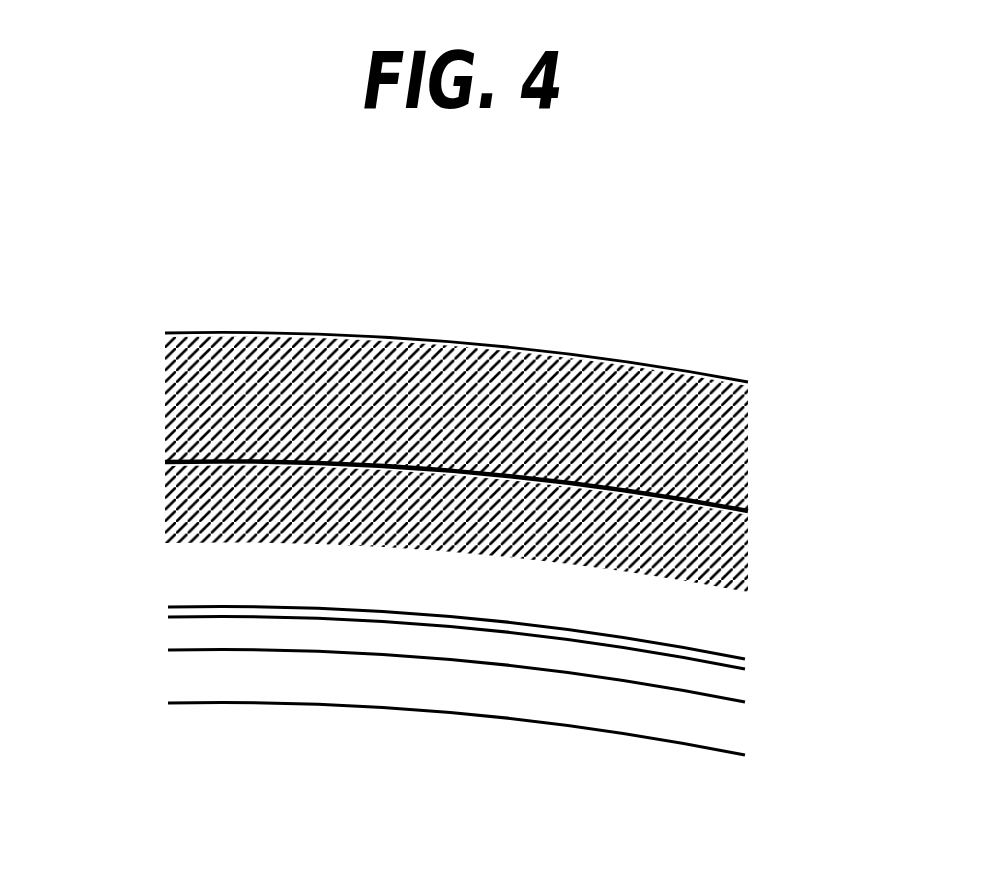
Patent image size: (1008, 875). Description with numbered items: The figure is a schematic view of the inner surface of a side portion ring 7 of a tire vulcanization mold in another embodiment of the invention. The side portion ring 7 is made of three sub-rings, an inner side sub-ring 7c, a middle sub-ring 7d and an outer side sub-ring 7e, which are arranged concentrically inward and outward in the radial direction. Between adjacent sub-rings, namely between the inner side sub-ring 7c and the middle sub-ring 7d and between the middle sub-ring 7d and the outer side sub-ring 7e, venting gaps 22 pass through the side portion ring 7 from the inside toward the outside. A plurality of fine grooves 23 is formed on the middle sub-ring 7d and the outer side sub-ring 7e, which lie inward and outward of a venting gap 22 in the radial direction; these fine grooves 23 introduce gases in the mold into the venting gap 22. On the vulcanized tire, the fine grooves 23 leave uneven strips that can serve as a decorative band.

The side portion ring 7 is at (763, 488).
The inner side sub-ring 7c is at (725, 722).
The middle sub-ring 7d is at (712, 607).
The outer side sub-ring 7e is at (722, 426).
The venting gap 22 is at (348, 463).
The fine grooves 23 is at (152, 343).